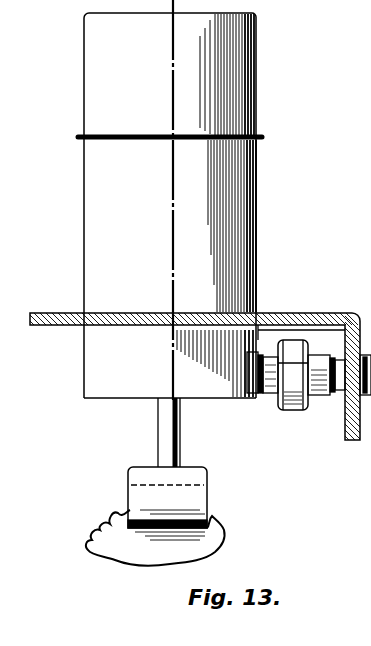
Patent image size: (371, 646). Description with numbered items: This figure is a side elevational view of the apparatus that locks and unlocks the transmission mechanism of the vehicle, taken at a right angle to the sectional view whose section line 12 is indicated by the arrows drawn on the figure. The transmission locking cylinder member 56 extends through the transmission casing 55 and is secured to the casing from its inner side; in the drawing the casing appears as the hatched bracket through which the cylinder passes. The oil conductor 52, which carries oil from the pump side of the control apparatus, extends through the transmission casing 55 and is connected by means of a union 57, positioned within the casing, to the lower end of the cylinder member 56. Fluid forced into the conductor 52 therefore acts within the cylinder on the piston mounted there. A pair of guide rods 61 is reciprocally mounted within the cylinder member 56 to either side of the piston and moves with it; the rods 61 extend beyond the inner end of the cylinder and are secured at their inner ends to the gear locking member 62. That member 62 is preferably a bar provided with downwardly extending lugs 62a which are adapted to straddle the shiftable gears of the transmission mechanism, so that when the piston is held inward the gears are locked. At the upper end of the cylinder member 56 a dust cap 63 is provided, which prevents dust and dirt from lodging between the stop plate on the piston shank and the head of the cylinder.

The section line 12 is at (173, 25).
The oil conductor 52 is at (334, 398).
The transmission casing 55 is at (303, 313).
The transmission locking cylinder member 56 is at (233, 249).
The union 57 is at (290, 410).
The guide rods 61 is at (182, 437).
The gear locking member 62 is at (190, 480).
The downwardly extending lugs 62a is at (188, 505).
The dust cap 63 is at (238, 92).